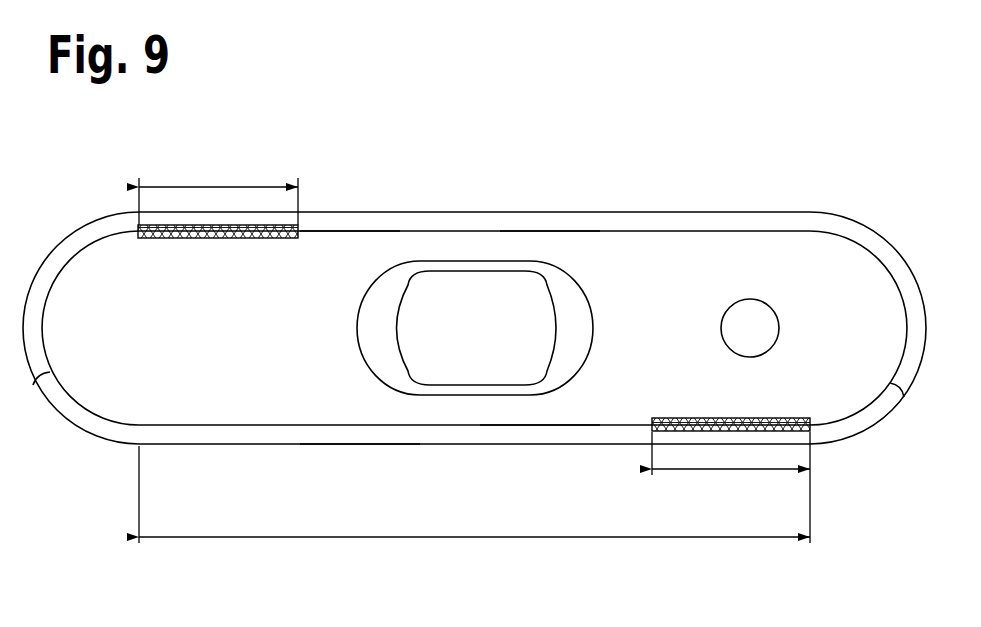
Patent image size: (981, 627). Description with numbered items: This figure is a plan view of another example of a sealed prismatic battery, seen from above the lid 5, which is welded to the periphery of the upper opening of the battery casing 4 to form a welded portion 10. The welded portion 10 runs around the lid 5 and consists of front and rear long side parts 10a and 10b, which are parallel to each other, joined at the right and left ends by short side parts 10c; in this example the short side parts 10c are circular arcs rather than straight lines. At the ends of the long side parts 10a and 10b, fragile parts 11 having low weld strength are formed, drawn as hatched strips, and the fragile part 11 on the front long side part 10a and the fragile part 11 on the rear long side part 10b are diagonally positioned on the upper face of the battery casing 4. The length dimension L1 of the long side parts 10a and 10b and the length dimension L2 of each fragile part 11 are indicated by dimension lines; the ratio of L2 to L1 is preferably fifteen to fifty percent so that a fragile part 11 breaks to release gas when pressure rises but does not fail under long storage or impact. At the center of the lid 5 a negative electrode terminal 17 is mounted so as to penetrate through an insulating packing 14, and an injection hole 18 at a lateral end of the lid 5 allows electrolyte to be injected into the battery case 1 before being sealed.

The battery case 1 is at (683, 201).
The battery casing 4 is at (337, 447).
The lid 5 is at (347, 258).
The welded portion 10 is at (431, 426).
The front long side part 10a is at (523, 425).
The rear long side part 10b is at (550, 232).
The short side part 10c is at (33, 385).
The fragile part 11 is at (192, 238).
The insulating packing 14 is at (563, 350).
The negative electrode terminal 17 is at (523, 307).
The injection hole 18 is at (727, 329).
The length dimension of the long side parts L1 is at (478, 538).
The length dimension of the fragile part L2 is at (218, 185).